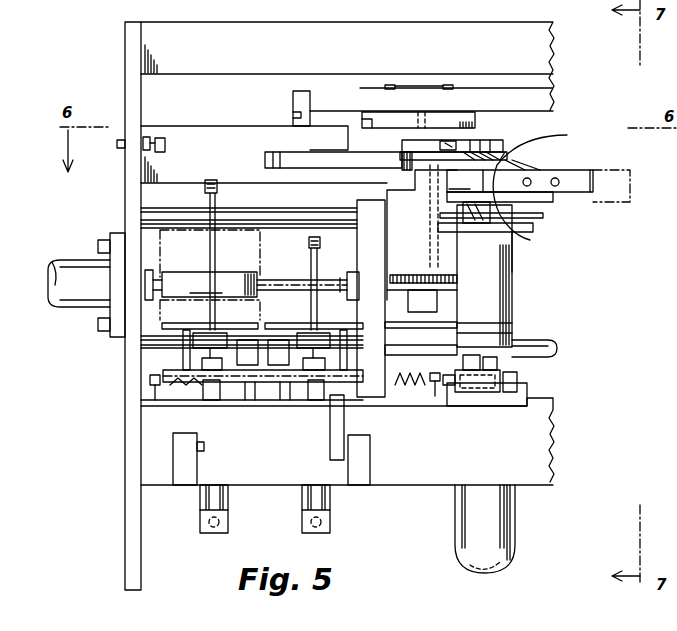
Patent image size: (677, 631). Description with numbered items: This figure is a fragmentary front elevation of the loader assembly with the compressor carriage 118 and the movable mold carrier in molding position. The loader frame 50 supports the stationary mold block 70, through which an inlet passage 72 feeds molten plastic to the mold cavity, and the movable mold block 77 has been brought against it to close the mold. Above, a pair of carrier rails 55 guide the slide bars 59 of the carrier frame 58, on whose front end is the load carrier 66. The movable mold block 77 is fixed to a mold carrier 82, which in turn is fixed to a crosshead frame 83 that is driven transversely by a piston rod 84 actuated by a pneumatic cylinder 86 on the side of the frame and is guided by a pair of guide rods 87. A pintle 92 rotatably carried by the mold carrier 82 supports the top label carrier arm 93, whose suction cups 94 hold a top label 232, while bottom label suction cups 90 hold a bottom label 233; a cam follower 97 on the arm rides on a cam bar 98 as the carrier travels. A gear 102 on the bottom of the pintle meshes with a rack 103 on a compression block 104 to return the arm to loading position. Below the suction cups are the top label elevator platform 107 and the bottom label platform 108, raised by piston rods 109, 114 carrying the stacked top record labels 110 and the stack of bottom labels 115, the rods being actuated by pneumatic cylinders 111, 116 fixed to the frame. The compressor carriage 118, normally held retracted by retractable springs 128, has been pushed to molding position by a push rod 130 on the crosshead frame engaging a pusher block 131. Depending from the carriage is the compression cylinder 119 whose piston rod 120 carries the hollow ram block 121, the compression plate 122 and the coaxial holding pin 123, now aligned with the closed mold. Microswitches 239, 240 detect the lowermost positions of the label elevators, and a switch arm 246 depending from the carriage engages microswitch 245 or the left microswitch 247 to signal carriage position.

The loader frame 50 is at (110, 45).
The carrier rail 55 is at (293, 117).
The carrier frame 58 is at (556, 94).
The slide bar 59 is at (293, 101).
The load carrier 66 is at (462, 110).
The stationary mold block 70 is at (590, 176).
The inlet passage 72 is at (545, 198).
The movable mold block 77 is at (632, 200).
The mold carrier 82 is at (418, 216).
The crosshead frame 83 is at (371, 298).
The piston rod 84 is at (268, 276).
The pneumatic cylinder 86 is at (95, 293).
The guide rod 87 is at (155, 195).
The bottom label suction cup 90 is at (463, 218).
The pintle 92 is at (430, 248).
The top label carrier arm 93 is at (472, 142).
The top label suction cup 94 is at (498, 172).
The cam follower 97 is at (400, 160).
The cam bar 98 is at (313, 160).
The gear 102 is at (437, 300).
The rack 103 is at (432, 275).
The compression block 104 is at (365, 306).
The top label elevator platform 107 is at (201, 285).
The bottom label platform 108 is at (388, 331).
The piston rod 109 is at (205, 203).
The stacked top record labels 110 is at (268, 215).
The pneumatic cylinder 111 is at (228, 500).
The piston rod 114 is at (322, 268).
The stack of bottom labels 115 is at (258, 318).
The pneumatic cylinder 116 is at (330, 502).
The compressor carriage 118 is at (476, 412).
The compression cylinder 119 is at (495, 528).
The piston rod 120 is at (520, 352).
The ram block 121 is at (484, 320).
The compression plate 122 is at (451, 232).
The holding pin 123 is at (515, 240).
The retractable spring 128 is at (416, 400).
The push rod 130 is at (514, 406).
The pusher block 131 is at (520, 380).
The top label 232 is at (544, 183).
The bottom label 233 is at (523, 237).
The microswitch 239 is at (248, 352).
The microswitch 240 is at (282, 352).
The microswitch 245 is at (362, 470).
The switch arm 246 is at (335, 437).
The left microswitch 247 is at (185, 475).